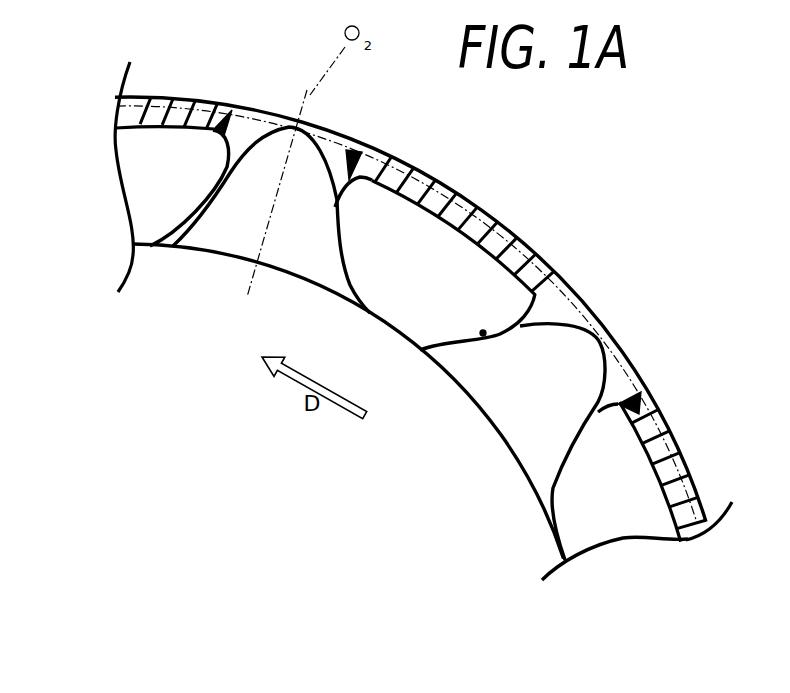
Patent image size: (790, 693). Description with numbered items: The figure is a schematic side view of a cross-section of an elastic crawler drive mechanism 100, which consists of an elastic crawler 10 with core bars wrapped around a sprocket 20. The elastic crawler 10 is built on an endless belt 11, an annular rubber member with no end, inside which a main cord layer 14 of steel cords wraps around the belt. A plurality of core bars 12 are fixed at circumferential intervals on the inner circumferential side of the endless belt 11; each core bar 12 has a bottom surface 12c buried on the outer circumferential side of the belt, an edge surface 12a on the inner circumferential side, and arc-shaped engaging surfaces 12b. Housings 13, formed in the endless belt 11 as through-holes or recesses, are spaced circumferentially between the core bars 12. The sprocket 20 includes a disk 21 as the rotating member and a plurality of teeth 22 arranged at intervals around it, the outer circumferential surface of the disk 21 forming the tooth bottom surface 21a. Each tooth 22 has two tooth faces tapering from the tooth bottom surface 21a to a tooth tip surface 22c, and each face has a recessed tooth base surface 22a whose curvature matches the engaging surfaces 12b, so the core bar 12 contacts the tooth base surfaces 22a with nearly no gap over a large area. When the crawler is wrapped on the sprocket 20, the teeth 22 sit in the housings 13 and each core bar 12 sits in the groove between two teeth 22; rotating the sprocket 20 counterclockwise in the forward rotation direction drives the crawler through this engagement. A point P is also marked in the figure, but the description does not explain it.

The elastic crawler drive mechanism 100 is at (620, 214).
The elastic crawler 10 is at (510, 222).
The endless belt 11 is at (463, 197).
The core bar 12 is at (138, 156).
The edge surface 12a is at (136, 244).
The engaging surface 12b is at (212, 198).
The bottom surface 12c is at (140, 125).
The housing 13 is at (336, 156).
The main cord layer 14 is at (672, 424).
The sprocket 20 is at (557, 580).
The disk 21 is at (167, 270).
The tooth bottom surface 21a is at (140, 228).
The tooth 22 is at (264, 168).
The tooth base surface 22a is at (188, 222).
The tooth tip surface 22c is at (307, 103).
The point P is at (484, 335).